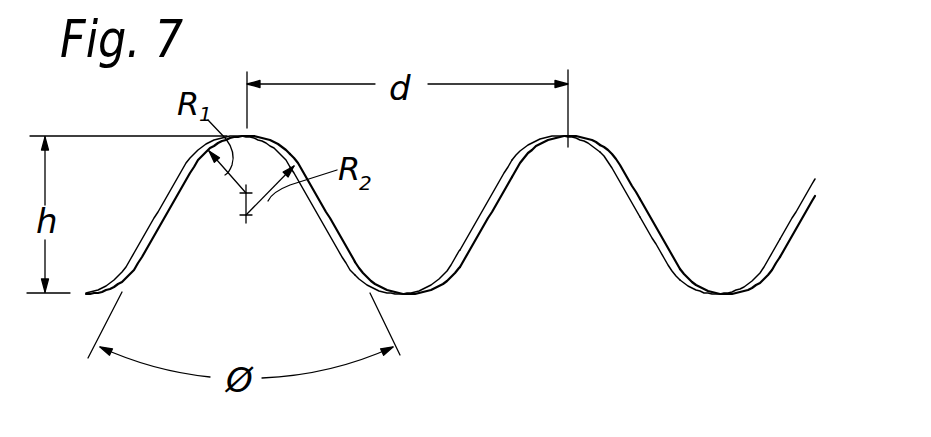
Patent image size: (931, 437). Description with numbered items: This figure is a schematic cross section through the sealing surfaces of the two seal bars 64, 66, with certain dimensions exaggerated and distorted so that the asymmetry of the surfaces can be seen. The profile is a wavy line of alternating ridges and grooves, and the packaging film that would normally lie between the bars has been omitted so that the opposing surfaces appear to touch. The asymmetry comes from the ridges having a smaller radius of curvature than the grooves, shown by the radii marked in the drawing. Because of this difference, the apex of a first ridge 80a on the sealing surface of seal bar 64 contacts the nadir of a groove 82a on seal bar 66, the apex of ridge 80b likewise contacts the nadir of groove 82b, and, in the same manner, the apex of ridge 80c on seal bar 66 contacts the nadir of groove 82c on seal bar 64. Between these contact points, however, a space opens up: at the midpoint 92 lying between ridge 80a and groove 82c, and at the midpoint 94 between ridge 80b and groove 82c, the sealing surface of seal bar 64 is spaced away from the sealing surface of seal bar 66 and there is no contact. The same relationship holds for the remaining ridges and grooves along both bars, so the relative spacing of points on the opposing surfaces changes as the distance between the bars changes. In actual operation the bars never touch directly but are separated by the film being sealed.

The seal bar 64 is at (452, 186).
The seal bar 66 is at (573, 252).
The first ridge 80a is at (408, 268).
The ridge 80b is at (728, 267).
The ridge 80c is at (583, 165).
The groove 82a is at (348, 263).
The groove 82b is at (818, 257).
The groove 82c is at (617, 160).
The midpoint 92 is at (482, 232).
The midpoint 94 is at (647, 217).